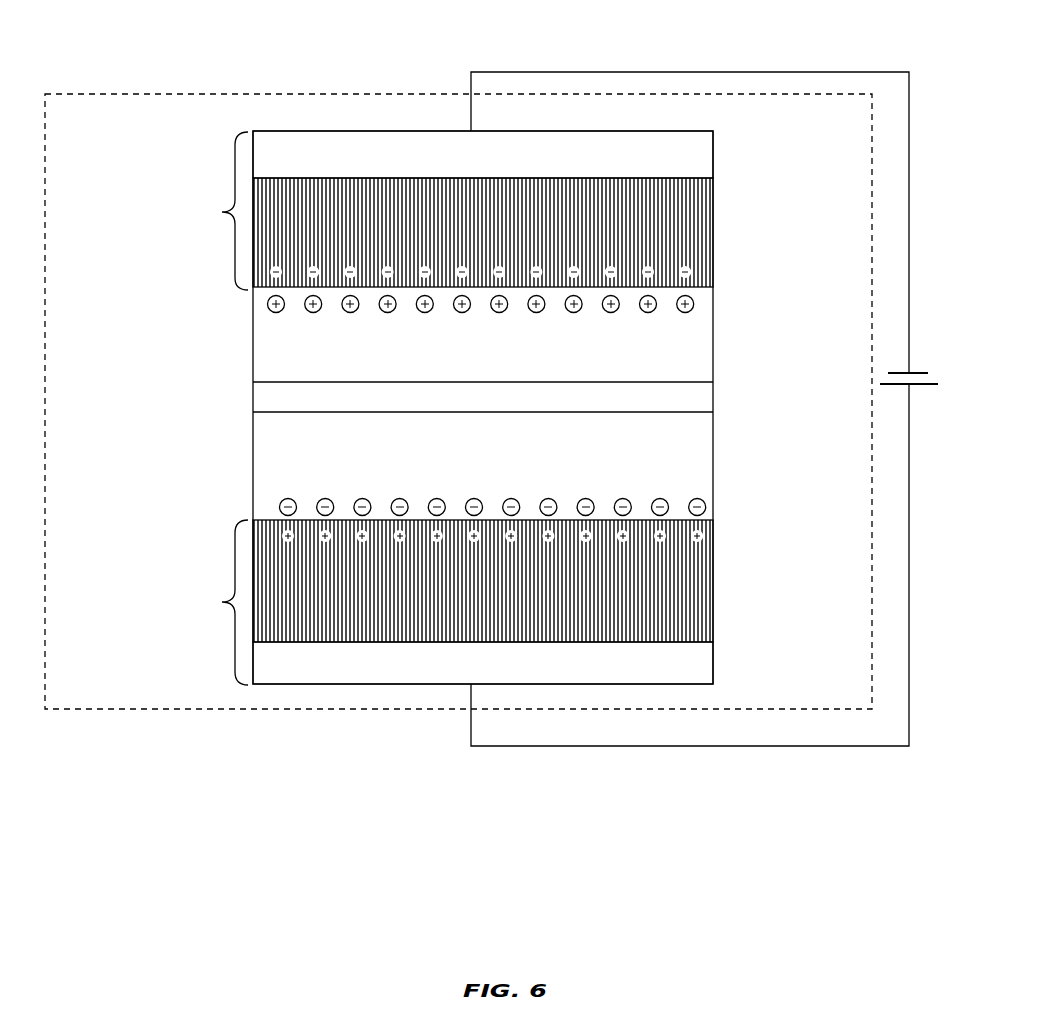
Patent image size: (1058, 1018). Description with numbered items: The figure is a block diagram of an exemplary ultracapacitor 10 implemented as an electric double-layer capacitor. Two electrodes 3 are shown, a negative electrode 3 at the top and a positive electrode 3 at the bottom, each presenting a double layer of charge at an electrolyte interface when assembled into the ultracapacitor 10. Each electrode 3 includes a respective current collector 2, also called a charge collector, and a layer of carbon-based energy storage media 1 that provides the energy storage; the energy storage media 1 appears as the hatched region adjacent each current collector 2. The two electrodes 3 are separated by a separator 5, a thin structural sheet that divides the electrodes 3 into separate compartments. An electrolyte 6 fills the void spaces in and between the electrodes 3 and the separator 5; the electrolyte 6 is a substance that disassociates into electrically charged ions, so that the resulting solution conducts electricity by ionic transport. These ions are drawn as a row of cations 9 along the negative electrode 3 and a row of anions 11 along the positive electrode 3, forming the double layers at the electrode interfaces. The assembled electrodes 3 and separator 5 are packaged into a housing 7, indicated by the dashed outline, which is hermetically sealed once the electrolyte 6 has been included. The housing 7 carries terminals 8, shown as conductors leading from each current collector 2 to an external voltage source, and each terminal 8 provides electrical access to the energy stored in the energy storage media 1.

The energy storage media 1 is at (483, 410).
The current collector 2 is at (483, 407).
The electrode 3 is at (179, 408).
The separator 5 is at (366, 440).
The electrolyte 6 is at (270, 415).
The housing 7 is at (176, 709).
The terminal 8 is at (565, 72).
The cation 9 is at (268, 305).
The ultracapacitor 10 is at (355, 766).
The anion 11 is at (283, 502).